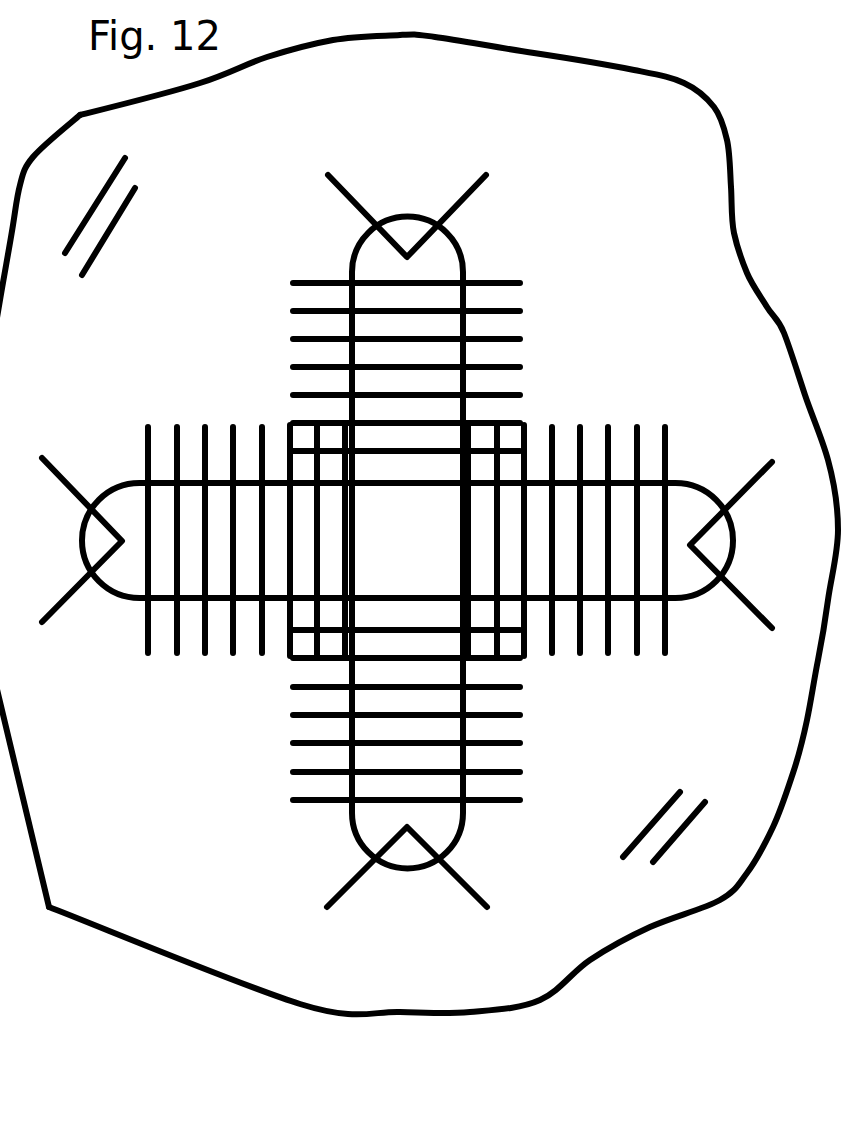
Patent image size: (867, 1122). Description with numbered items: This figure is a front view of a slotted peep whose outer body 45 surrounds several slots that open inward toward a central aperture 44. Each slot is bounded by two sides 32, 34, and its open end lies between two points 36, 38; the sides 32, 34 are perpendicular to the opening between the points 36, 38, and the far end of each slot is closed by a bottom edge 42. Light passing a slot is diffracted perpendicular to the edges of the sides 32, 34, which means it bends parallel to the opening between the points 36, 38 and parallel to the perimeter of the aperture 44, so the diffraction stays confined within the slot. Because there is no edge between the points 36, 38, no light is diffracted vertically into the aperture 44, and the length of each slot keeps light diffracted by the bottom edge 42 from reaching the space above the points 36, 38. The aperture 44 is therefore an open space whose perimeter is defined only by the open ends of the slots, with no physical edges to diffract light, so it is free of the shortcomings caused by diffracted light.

The side 32 is at (338, 325).
The side 34 is at (188, 468).
The point 36 is at (400, 540).
The point 38 is at (283, 416).
The bottom edge 42 is at (390, 180).
The aperture 44 is at (407, 543).
The outer peripheral boundary 45 is at (65, 446).